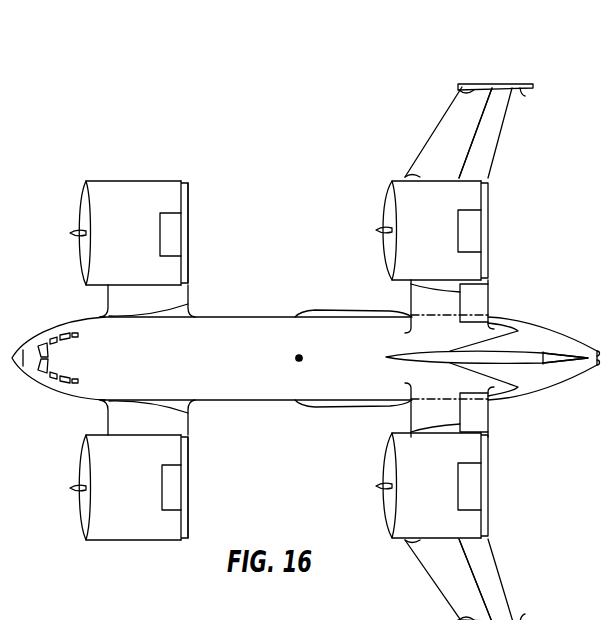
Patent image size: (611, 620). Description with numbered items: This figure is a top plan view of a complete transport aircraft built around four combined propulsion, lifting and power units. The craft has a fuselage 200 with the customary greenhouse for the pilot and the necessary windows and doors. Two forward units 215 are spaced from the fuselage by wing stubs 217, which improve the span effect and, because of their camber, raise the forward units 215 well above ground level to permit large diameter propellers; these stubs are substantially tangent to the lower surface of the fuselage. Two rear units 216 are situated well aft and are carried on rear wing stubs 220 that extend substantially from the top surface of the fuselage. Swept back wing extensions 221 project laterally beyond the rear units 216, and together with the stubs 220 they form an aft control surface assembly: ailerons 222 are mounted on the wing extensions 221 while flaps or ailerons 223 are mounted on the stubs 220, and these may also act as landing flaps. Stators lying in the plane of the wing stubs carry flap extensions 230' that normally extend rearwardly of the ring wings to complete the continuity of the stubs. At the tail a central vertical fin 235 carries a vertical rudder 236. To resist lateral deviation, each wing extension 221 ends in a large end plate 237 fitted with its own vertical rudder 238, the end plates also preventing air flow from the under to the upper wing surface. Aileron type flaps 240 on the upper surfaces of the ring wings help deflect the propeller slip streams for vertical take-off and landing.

The fuselage 200 is at (249, 310).
The forward propulsion, lifting and power unit 215 is at (133, 246).
The rear propulsion, lifting and power unit 216 is at (430, 245).
The wing stub 217 is at (151, 311).
The rear wing stub 220 is at (451, 309).
The swept back wing extension 221 is at (440, 136).
The aileron 222 is at (494, 137).
The flap or aileron 223 is at (483, 301).
The stator flap extension 230' is at (210, 360).
The central vertical fin 235 is at (437, 357).
The vertical rudder 236 is at (566, 354).
The end plate 237 is at (462, 90).
The vertical rudder 238 is at (522, 91).
The aileron type flap 240 is at (172, 237).